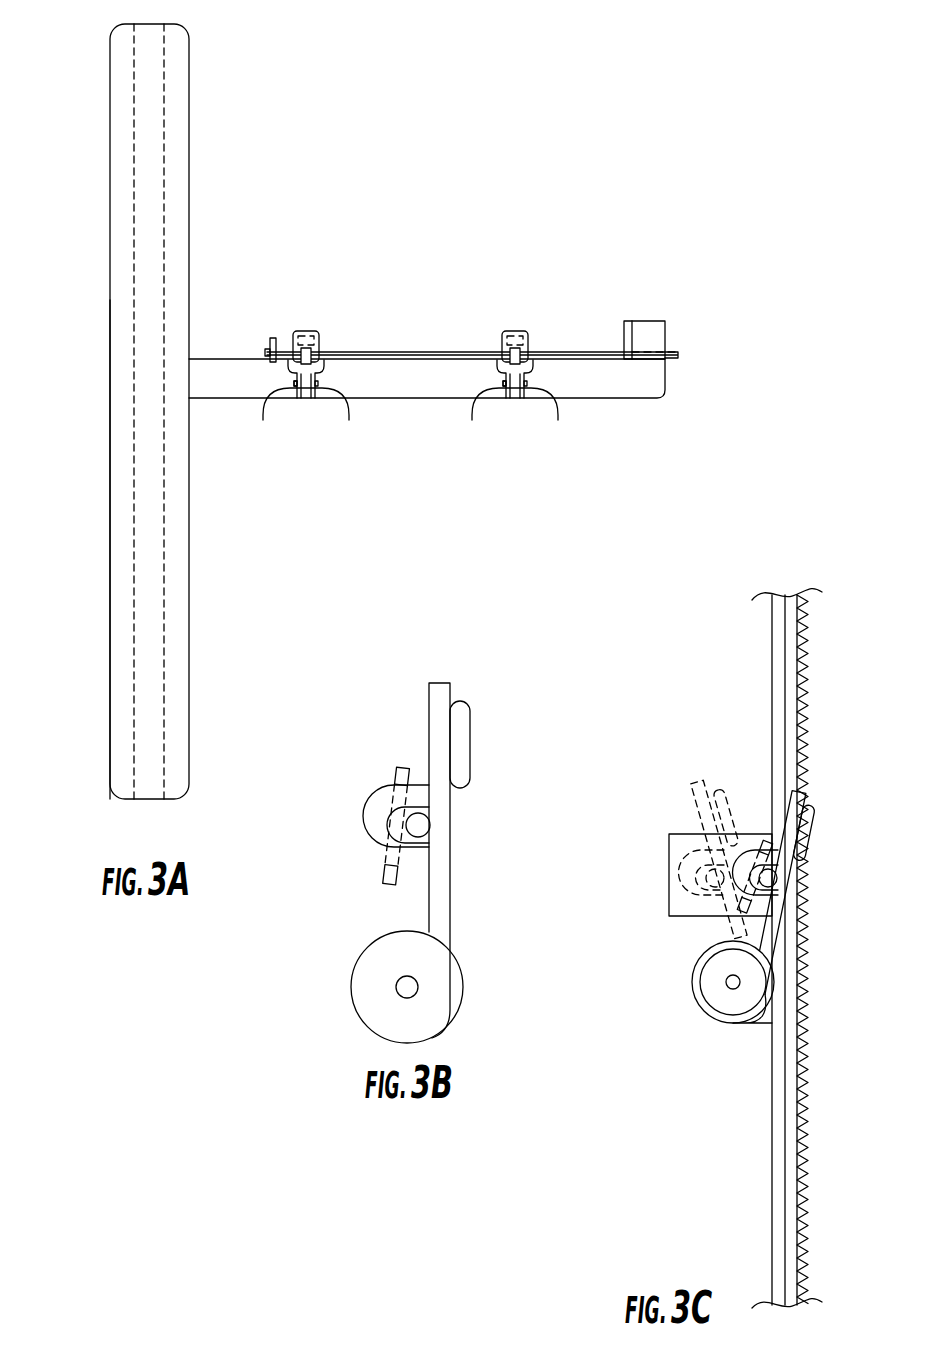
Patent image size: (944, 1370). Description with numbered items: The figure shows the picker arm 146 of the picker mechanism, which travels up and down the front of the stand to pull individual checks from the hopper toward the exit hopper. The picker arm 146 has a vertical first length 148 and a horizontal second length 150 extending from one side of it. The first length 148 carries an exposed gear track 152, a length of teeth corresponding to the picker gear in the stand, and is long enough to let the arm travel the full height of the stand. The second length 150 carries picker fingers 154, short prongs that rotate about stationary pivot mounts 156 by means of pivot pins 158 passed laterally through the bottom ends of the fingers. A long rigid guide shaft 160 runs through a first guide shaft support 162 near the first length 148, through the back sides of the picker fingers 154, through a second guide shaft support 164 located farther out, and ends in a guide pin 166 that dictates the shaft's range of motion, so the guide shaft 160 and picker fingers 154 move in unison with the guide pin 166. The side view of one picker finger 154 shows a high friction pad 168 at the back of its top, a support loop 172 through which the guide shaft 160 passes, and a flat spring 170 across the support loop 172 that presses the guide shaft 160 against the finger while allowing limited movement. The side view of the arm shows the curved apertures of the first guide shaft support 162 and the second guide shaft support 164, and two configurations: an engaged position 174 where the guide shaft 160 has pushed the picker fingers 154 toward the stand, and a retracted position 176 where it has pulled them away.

In FIG. 3A, the picker arm 146 is at (96, 128).
In FIG. 3A, the first length 148 is at (114, 437).
In FIG. 3A, the second length 150 is at (628, 400).
In FIG. 3A, the gear track 152 is at (140, 258).
In FIG. 3C, the gear track 152 is at (812, 652).
In FIG. 3A, the picker fingers 154 is at (318, 332).
In FIG. 3B, the picker fingers 154 is at (438, 683).
In FIG. 3A, the pivot mounts 156 is at (322, 386).
In FIG. 3B, the pivot mounts 156 is at (370, 957).
In FIG. 3A, the pivot pins 158 is at (298, 390).
In FIG. 3B, the pivot pins 158 is at (405, 989).
In FIG. 3A, the guide shaft 160 is at (574, 351).
In FIG. 3B, the guide shaft 160 is at (420, 826).
In FIG. 3A, the first guide shaft support 162 is at (272, 345).
In FIG. 3C, the first guide shaft support 162 is at (672, 850).
In FIG. 3A, the second guide shaft support 164 is at (636, 320).
In FIG. 3A, the guide pin 166 is at (660, 352).
In FIG. 3B, the pad 168 is at (468, 738).
In FIG. 3B, the flat spring 170 is at (403, 768).
In FIG. 3B, the support loop 172 is at (370, 840).
In FIG. 3C, the support loop 172 is at (735, 931).
In FIG. 3C, the engaged position 174 is at (810, 795).
In FIG. 3C, the retracted position 176 is at (700, 790).